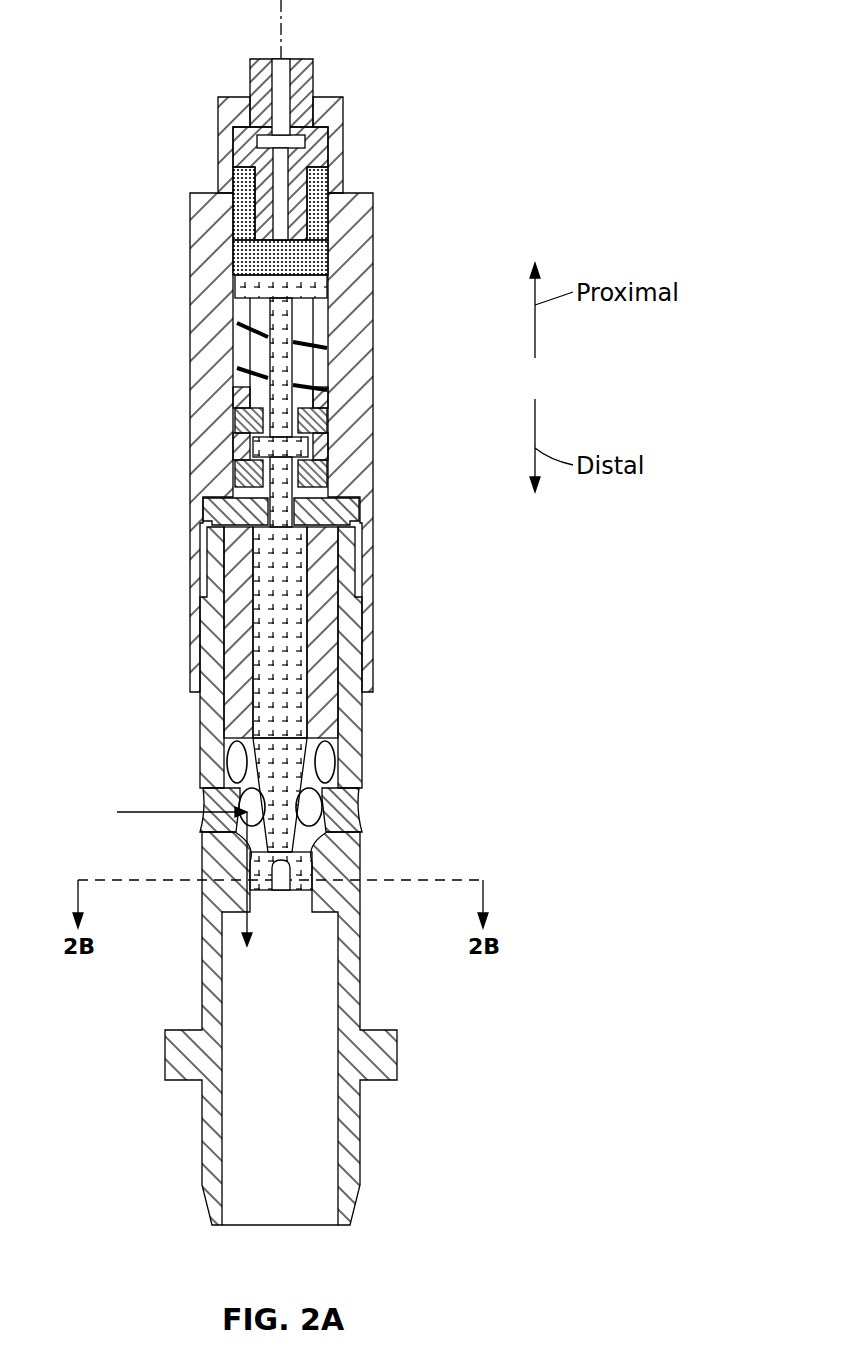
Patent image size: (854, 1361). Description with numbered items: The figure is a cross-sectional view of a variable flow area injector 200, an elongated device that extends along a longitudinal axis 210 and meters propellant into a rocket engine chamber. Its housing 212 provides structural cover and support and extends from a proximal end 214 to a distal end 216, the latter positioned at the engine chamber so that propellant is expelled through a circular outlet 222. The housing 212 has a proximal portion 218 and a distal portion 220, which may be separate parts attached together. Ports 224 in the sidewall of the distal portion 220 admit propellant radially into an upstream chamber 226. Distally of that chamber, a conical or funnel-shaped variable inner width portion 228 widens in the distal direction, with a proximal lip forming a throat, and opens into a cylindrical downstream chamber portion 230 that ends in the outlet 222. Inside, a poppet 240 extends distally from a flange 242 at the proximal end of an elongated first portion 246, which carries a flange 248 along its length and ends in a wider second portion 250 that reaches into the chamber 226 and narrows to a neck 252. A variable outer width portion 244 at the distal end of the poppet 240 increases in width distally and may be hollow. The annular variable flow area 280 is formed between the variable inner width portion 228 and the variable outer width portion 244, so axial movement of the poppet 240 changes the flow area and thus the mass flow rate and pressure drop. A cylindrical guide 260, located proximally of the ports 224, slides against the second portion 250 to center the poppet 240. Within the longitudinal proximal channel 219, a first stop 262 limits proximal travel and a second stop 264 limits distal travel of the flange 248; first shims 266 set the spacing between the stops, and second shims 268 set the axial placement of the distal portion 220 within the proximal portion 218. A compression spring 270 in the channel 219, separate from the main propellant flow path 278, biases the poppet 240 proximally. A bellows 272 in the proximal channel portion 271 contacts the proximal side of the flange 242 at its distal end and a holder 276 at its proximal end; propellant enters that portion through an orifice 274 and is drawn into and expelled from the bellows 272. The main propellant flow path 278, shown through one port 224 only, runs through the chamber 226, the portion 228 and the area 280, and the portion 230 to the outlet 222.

The variable flow area injector 200 is at (464, 44).
The longitudinal axis 210 is at (281, 42).
The housing 212 is at (410, 524).
The proximal end 214 is at (344, 115).
The distal end 216 is at (353, 1205).
The proximal portion 218 is at (355, 372).
The longitudinal proximal channel 219 is at (238, 352).
The distal portion 220 is at (350, 968).
The outlet 222 is at (280, 1226).
The ports 224 is at (322, 798).
The upstream chamber 226 is at (345, 807).
The variable inner width portion 228 is at (330, 831).
The downstream chamber portion 230 is at (297, 1030).
The poppet 240 is at (277, 623).
The flange 242 is at (328, 298).
The variable outer width portion 244 is at (250, 890).
The first portion 246 is at (290, 360).
The flange 248 is at (235, 422).
The second portion 250 is at (277, 673).
The neck 252 is at (292, 768).
The guide 260 is at (330, 652).
The first stop 262 is at (240, 398).
The second stop 264 is at (233, 463).
The first shims 266 is at (240, 445).
The second shims 268 is at (210, 523).
The spring 270 is at (247, 323).
The proximal channel portion 271 is at (236, 222).
The bellows 272 is at (236, 248).
The orifice 274 is at (258, 70).
The holder 276 is at (318, 155).
The main propellant flow path 278 is at (165, 812).
The variable flow area 280 is at (320, 883).